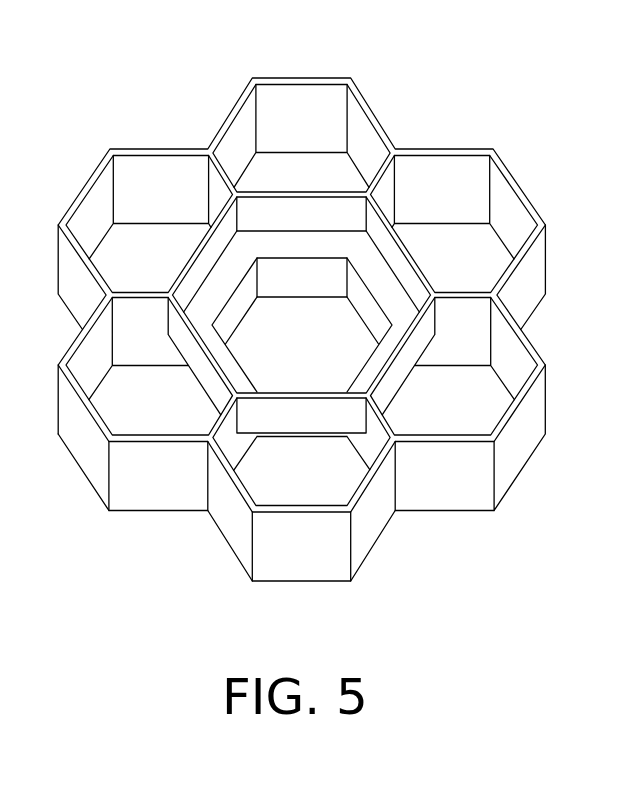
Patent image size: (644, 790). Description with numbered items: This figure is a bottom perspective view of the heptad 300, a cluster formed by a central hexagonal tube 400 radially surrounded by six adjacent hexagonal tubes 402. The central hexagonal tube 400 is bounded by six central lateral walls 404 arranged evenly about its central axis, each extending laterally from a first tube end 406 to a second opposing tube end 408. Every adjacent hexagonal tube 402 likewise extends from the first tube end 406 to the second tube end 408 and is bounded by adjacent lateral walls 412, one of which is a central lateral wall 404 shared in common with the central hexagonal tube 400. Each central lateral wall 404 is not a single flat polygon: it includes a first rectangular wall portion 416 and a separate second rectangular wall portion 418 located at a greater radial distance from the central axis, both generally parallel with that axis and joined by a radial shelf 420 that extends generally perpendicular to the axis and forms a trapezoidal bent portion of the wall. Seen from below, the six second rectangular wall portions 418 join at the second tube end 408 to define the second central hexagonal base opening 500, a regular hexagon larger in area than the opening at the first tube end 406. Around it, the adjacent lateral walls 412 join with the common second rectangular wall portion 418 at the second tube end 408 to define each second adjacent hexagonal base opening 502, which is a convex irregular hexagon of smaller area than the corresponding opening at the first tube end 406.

The heptad 300 is at (412, 57).
The central hexagonal tube 400 is at (323, 326).
The adjacent hexagonal tube 402 is at (327, 481).
The central lateral wall 404 is at (192, 350).
The first tube end 406 is at (545, 435).
The second opposing tube end 408 is at (545, 364).
The adjacent lateral wall 412 is at (320, 96).
The first rectangular wall portion 416 is at (333, 278).
The second rectangular wall portion 418 is at (280, 210).
The radial shelf 420 is at (220, 280).
The second central hexagonal base opening 500 is at (358, 336).
The second adjacent hexagonal base opening 502 is at (453, 407).